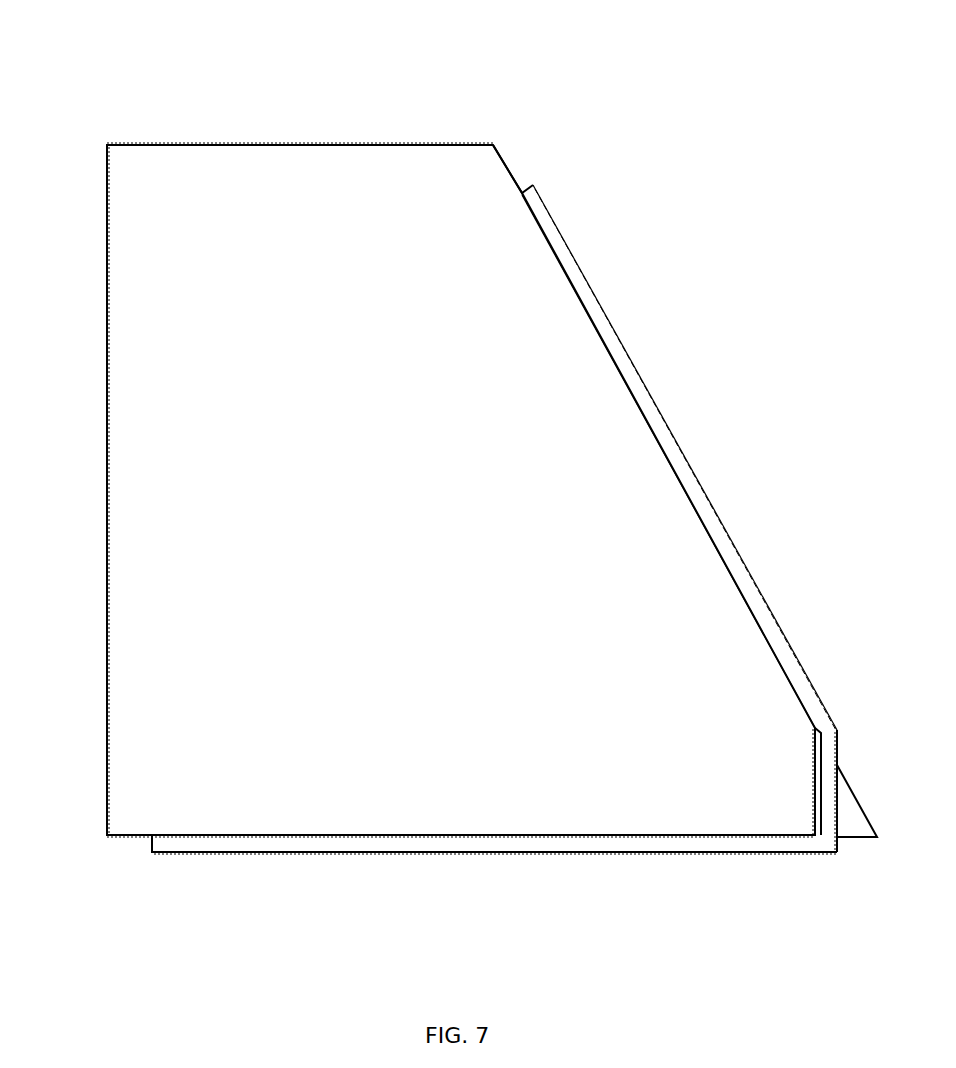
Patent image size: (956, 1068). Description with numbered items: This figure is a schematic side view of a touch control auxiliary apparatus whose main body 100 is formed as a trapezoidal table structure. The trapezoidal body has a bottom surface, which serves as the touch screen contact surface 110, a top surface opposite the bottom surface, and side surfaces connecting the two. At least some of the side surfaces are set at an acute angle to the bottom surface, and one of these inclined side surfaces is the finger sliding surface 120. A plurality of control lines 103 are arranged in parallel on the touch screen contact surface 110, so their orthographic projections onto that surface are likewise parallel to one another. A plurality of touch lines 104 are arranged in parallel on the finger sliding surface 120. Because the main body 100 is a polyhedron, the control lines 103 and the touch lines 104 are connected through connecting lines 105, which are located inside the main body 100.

The main body 100 is at (367, 163).
The finger sliding surface 120 is at (504, 156).
The touch lines 104 is at (681, 450).
The control lines 103 is at (348, 840).
The connecting lines 105 is at (832, 812).
The touch screen contact surface 110 is at (139, 837).